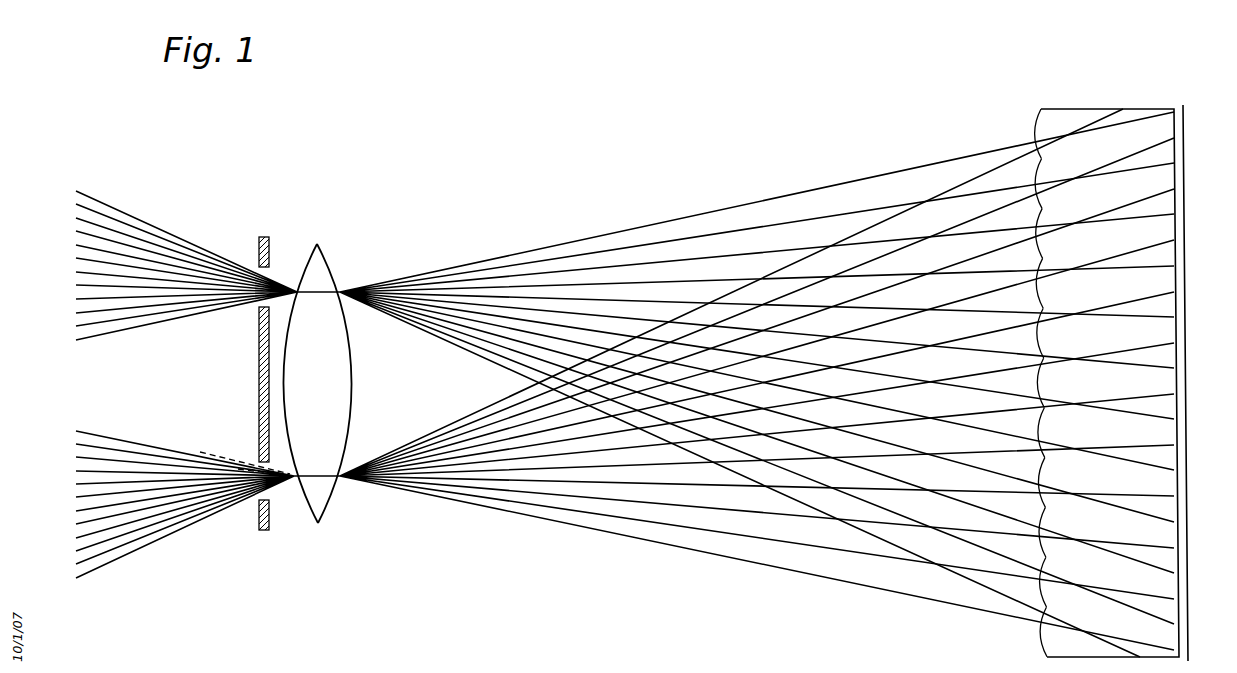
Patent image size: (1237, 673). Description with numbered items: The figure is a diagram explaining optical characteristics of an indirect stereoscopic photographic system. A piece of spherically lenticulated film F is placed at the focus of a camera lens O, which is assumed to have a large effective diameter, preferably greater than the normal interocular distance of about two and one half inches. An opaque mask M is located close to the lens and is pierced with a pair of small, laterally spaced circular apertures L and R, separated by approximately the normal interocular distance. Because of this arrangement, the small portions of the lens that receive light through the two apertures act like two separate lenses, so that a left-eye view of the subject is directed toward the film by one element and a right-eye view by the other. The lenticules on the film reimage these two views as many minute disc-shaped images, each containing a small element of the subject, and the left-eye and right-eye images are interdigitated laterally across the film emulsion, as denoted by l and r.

The opaque mask M is at (262, 370).
The camera lens O is at (317, 366).
The right aperture R is at (250, 320).
The left aperture L is at (256, 449).
The spherically lenticulated film F is at (1111, 367).
The right-eye images r is at (1196, 370).
The left-eye images l is at (1194, 396).